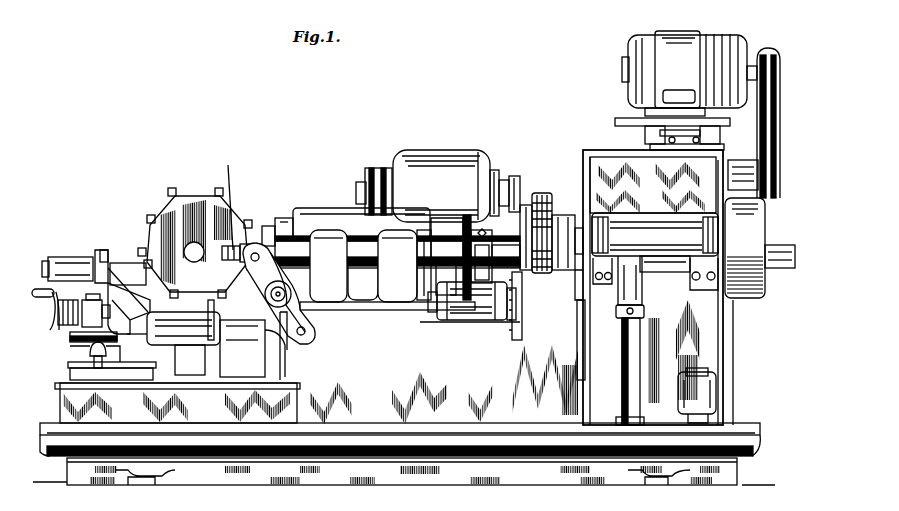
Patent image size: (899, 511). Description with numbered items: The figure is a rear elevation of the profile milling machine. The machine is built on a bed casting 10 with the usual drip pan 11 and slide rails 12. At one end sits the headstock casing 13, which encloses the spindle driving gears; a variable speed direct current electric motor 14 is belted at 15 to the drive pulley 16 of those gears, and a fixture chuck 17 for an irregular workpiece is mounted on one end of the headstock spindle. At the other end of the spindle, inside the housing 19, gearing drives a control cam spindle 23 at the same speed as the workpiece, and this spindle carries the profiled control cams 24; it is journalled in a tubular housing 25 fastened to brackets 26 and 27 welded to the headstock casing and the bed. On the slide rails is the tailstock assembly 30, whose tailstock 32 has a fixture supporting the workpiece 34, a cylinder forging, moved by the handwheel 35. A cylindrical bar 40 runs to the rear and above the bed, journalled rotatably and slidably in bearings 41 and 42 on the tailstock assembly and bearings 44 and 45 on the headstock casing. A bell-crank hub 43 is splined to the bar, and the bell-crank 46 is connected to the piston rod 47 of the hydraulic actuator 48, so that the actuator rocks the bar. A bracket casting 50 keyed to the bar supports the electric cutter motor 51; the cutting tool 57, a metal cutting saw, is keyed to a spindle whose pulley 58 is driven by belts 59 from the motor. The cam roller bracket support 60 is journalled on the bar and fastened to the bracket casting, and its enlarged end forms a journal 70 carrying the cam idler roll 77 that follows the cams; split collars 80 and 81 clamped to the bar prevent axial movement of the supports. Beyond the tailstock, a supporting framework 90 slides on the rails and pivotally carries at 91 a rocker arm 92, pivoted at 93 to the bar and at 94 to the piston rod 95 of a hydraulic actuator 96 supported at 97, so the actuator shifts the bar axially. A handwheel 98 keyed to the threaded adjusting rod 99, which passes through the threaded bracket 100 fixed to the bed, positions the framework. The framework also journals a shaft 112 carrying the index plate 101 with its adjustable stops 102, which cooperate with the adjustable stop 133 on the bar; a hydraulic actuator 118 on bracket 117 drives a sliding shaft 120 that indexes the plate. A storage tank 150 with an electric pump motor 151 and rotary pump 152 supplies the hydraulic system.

The bed casting 10 is at (728, 402).
The drip pan 11 is at (470, 478).
The slide rails 12 is at (390, 306).
The headstock casing 13 is at (615, 122).
The electric motor 14 is at (642, 50).
The belt 15 is at (758, 116).
The drive pulley 16 is at (757, 152).
The fixture chuck 17 is at (560, 215).
The housing 19 is at (768, 236).
The control cam spindle 23 is at (592, 225).
The profiled control cams 24 is at (545, 195).
The tubular housing 25 is at (627, 172).
The bracket 26 is at (727, 317).
The bracket 27 is at (578, 350).
The tailstock assembly 30 is at (326, 216).
The tailstock 32 is at (288, 220).
The workpiece 34 is at (527, 205).
The handwheel 35 is at (252, 244).
The cylindrical bar 40 is at (362, 256).
The bearing 41 is at (322, 245).
The bearing 42 is at (400, 268).
The bell-crank hub 43 is at (668, 260).
The bearing 44 is at (595, 284).
The bearing 45 is at (706, 272).
The bell-crank 46 is at (638, 300).
The piston rod 47 is at (620, 316).
The hydraulic actuator 48 is at (630, 420).
The bracket casting 50 is at (478, 262).
The electric cutter motor 51 is at (463, 158).
The cutting tool 57 is at (495, 178).
The pulley 58 is at (362, 186).
The belts 59 is at (377, 178).
The cam roller bracket support 60 is at (466, 300).
The journal 70 is at (476, 316).
The cam idler roll 77 is at (522, 320).
The split collar 80 is at (438, 268).
The split collar 81 is at (500, 308).
The supporting framework 90 is at (80, 342).
The pivot 91 is at (290, 300).
The rocker arm 92 is at (258, 272).
The pivotal connection 93 is at (232, 246).
The pivotal connection 94 is at (306, 336).
The piston rod 95 is at (288, 352).
The hydraulic actuator 96 is at (186, 332).
The pivot 97 is at (112, 350).
The handwheel 98 is at (56, 310).
The threaded adjusting rod 99 is at (97, 262).
The threaded bracket 100 is at (86, 322).
The index plate 101 is at (196, 200).
The adjustable stops 102 is at (172, 190).
The shaft 112 is at (192, 252).
The bracket 117 is at (104, 250).
The hydraulic actuator 118 is at (65, 258).
The shaft 120 is at (128, 264).
The adjustable stop 133 is at (237, 195).
The storage tank 150 is at (70, 395).
The electric pump motor 151 is at (252, 430).
The rotary pump 152 is at (80, 364).